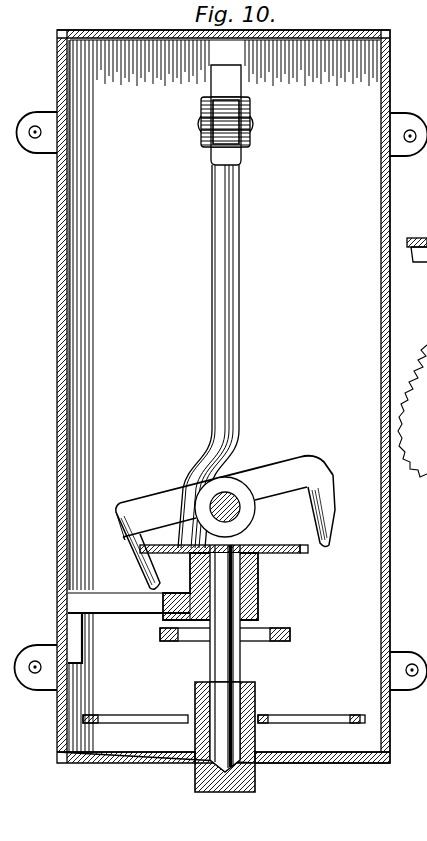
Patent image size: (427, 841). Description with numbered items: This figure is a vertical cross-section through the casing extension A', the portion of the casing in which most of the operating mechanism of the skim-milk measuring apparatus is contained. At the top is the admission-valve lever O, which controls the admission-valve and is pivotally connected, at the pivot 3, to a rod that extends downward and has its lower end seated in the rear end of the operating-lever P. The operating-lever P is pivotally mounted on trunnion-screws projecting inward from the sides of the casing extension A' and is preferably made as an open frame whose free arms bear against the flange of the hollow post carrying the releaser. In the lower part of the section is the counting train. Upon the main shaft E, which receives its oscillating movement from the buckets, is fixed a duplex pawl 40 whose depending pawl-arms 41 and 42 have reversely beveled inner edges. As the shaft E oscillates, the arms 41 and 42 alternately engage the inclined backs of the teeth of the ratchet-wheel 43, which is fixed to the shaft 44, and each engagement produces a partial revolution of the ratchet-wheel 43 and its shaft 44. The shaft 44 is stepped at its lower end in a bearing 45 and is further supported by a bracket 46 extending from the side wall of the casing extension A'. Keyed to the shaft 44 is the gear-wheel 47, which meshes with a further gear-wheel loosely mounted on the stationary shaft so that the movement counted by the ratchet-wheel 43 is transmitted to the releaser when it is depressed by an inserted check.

The casing extension A' is at (221, 396).
The admission-valve lever O is at (251, 111).
The pivotal connection 3 is at (251, 126).
The operating-lever P is at (304, 634).
The duplex pawl 40 is at (225, 522).
The pawl-arm 41 is at (334, 514).
The pawl-arm 42 is at (135, 568).
The ratchet-wheel 43 is at (283, 556).
The shaft 44 is at (241, 660).
The bearing 45 is at (256, 737).
The bracket 46 is at (129, 628).
The gear-wheel 47 is at (333, 705).
The main shaft E is at (412, 357).